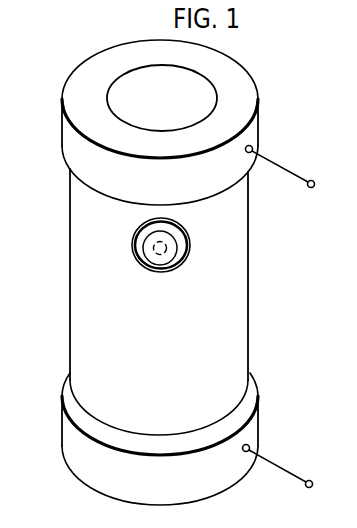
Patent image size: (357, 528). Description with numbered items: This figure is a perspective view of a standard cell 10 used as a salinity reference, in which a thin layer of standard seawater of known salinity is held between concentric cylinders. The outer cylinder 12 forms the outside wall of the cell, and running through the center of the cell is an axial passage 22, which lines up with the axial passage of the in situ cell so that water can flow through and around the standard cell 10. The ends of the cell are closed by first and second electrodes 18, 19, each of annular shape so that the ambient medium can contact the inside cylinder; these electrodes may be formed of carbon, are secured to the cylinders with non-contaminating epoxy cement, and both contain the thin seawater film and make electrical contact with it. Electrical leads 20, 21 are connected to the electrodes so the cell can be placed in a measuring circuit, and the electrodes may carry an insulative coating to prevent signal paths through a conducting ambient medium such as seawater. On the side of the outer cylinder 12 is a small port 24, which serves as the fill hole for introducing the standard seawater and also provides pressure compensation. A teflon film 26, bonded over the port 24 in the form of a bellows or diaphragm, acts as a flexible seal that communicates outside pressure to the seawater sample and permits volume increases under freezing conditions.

The standard cell 10 is at (298, 282).
The outer cylinder 12 is at (248, 343).
The first electrode 18 is at (70, 143).
The second electrode 19 is at (72, 452).
The electrical lead 20 is at (280, 164).
The electrical lead 21 is at (268, 458).
The axial passage 22 is at (152, 90).
The port 24 is at (174, 238).
The teflon film 26 is at (132, 248).